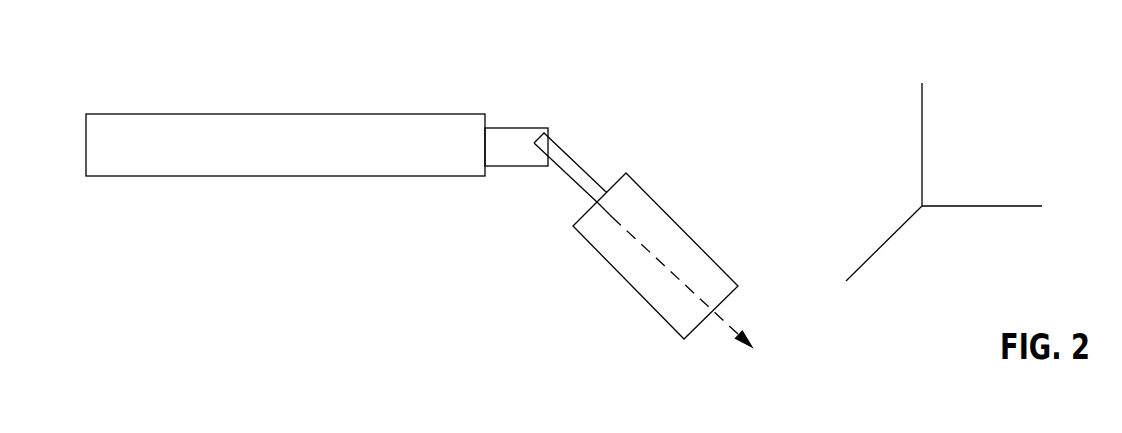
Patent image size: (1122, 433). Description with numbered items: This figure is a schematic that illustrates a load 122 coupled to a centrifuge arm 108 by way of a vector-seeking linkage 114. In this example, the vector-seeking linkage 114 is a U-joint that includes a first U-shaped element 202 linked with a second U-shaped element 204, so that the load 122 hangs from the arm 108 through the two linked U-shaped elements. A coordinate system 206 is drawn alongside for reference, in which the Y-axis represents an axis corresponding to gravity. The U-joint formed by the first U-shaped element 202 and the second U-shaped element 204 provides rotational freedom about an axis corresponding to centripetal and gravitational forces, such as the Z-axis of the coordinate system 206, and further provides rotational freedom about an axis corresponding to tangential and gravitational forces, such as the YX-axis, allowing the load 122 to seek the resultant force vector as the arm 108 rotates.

The arm 108 is at (287, 114).
The vector-seeking linkage 114 is at (582, 213).
The first U-shaped element 202 is at (510, 166).
The second U-shaped element 204 is at (575, 163).
The load 122 is at (683, 228).
The coordinate system 206 is at (1050, 102).